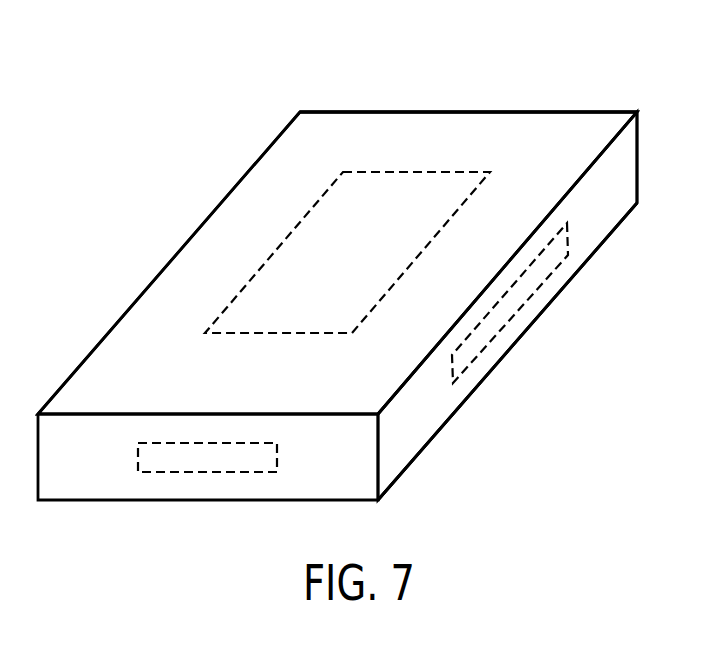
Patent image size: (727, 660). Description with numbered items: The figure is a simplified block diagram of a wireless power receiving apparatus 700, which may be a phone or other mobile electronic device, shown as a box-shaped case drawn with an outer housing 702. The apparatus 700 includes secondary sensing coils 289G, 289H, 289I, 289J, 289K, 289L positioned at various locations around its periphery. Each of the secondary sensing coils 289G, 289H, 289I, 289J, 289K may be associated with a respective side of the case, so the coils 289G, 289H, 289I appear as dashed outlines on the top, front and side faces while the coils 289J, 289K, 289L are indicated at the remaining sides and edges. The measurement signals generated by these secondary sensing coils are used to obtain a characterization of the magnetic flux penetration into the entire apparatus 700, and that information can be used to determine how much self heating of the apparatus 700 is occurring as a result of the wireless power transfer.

The wireless power receiving apparatus 700 is at (575, 71).
The housing 702 is at (609, 221).
The secondary sensing coil 289G is at (430, 171).
The secondary sensing coil 289H is at (278, 458).
The secondary sensing coil 289I is at (569, 234).
The secondary sensing coil 289J is at (476, 422).
The secondary sensing coil 289K is at (130, 259).
The secondary sensing coil 289L is at (434, 96).